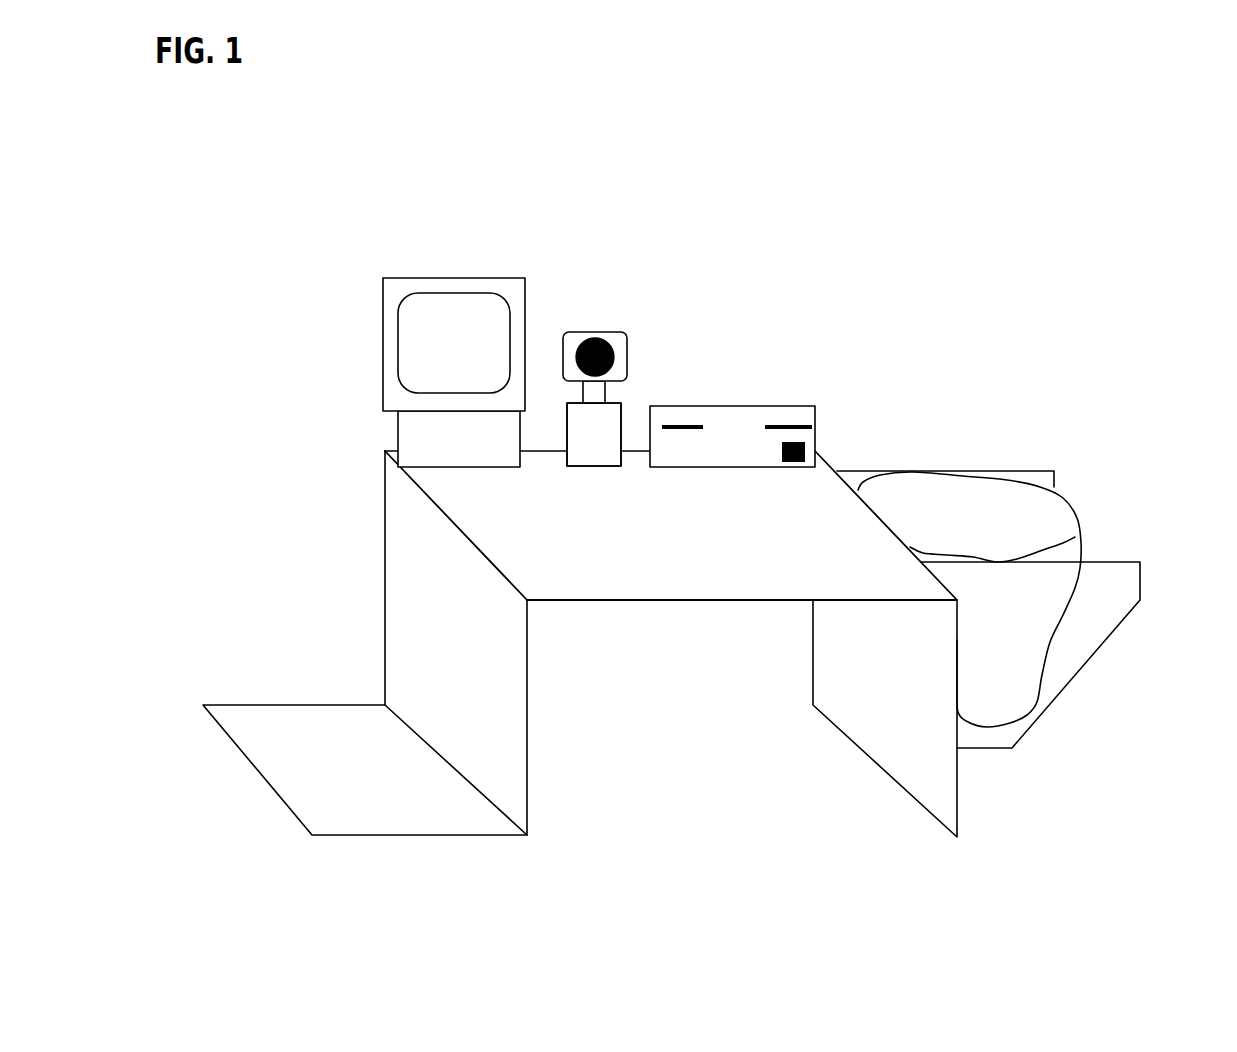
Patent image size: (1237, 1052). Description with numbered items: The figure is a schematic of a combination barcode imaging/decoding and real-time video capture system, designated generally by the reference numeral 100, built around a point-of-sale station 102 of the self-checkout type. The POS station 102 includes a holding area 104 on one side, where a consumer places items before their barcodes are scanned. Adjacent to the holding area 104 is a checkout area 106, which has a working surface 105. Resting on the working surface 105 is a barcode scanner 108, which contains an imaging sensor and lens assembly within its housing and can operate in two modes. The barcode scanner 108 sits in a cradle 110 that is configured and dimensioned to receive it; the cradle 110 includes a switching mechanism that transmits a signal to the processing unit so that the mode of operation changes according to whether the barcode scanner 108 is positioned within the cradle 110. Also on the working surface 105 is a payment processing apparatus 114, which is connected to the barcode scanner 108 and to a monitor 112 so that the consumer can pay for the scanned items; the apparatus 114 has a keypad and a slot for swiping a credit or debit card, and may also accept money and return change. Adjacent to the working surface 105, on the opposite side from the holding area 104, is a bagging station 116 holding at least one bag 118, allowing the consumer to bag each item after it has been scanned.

The combination system 100 is at (657, 133).
The POS station 102 is at (793, 193).
The holding area 104 is at (325, 775).
The working surface 105 is at (817, 542).
The checkout area 106 is at (597, 623).
The barcode scanner 108 is at (617, 347).
The cradle 110 is at (603, 430).
The monitor 112 is at (435, 337).
The payment processing apparatus 114 is at (810, 415).
The bagging station 116 is at (1102, 545).
The bag 118 is at (995, 503).